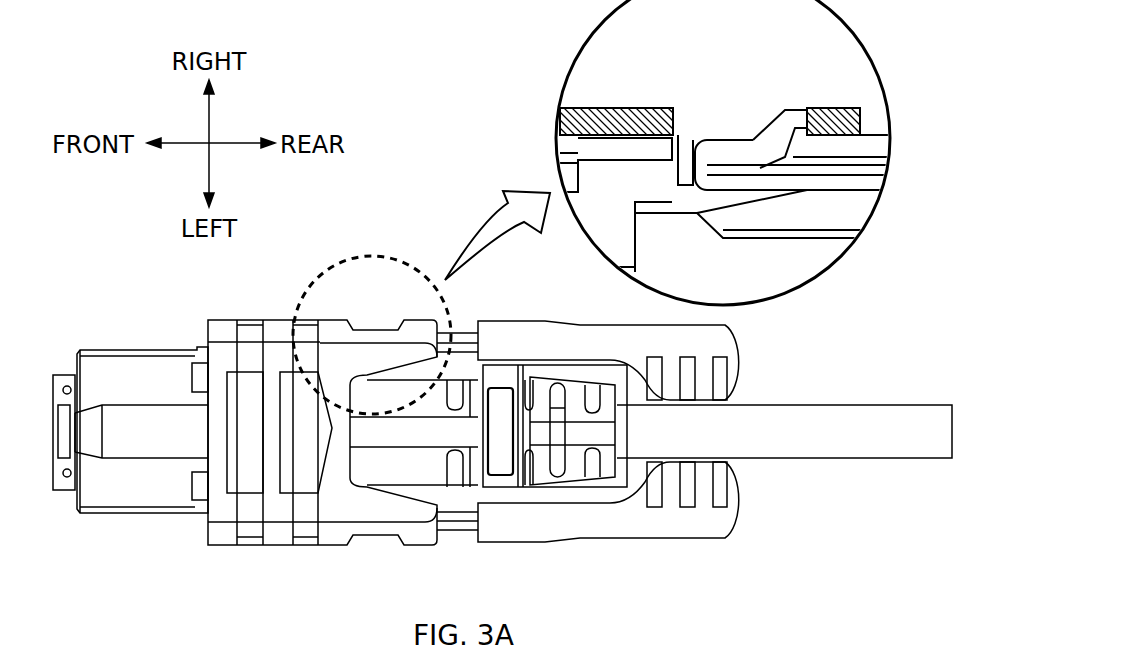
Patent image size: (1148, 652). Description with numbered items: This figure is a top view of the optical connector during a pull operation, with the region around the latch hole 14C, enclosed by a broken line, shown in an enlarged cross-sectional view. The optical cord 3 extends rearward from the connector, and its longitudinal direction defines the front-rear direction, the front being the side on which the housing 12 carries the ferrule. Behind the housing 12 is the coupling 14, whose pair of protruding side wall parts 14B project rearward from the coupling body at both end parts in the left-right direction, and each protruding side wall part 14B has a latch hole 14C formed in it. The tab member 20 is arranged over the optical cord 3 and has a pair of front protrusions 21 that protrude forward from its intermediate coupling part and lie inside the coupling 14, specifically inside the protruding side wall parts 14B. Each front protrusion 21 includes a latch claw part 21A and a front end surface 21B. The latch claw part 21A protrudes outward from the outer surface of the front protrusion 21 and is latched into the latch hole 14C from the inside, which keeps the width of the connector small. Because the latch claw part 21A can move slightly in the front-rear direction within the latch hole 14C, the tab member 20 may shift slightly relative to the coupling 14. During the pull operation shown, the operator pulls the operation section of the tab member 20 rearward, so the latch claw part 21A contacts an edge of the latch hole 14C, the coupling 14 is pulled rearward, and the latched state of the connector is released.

The optical cord 3 is at (904, 405).
The housing 12 is at (137, 350).
The coupling 14 is at (333, 545).
The protruding side wall parts 14B is at (615, 108).
The latch hole 14C is at (712, 102).
The tab member 20 is at (583, 543).
The front protrusions 21 is at (742, 150).
The latch claw part 21A is at (790, 110).
The front end surface 21B is at (690, 185).